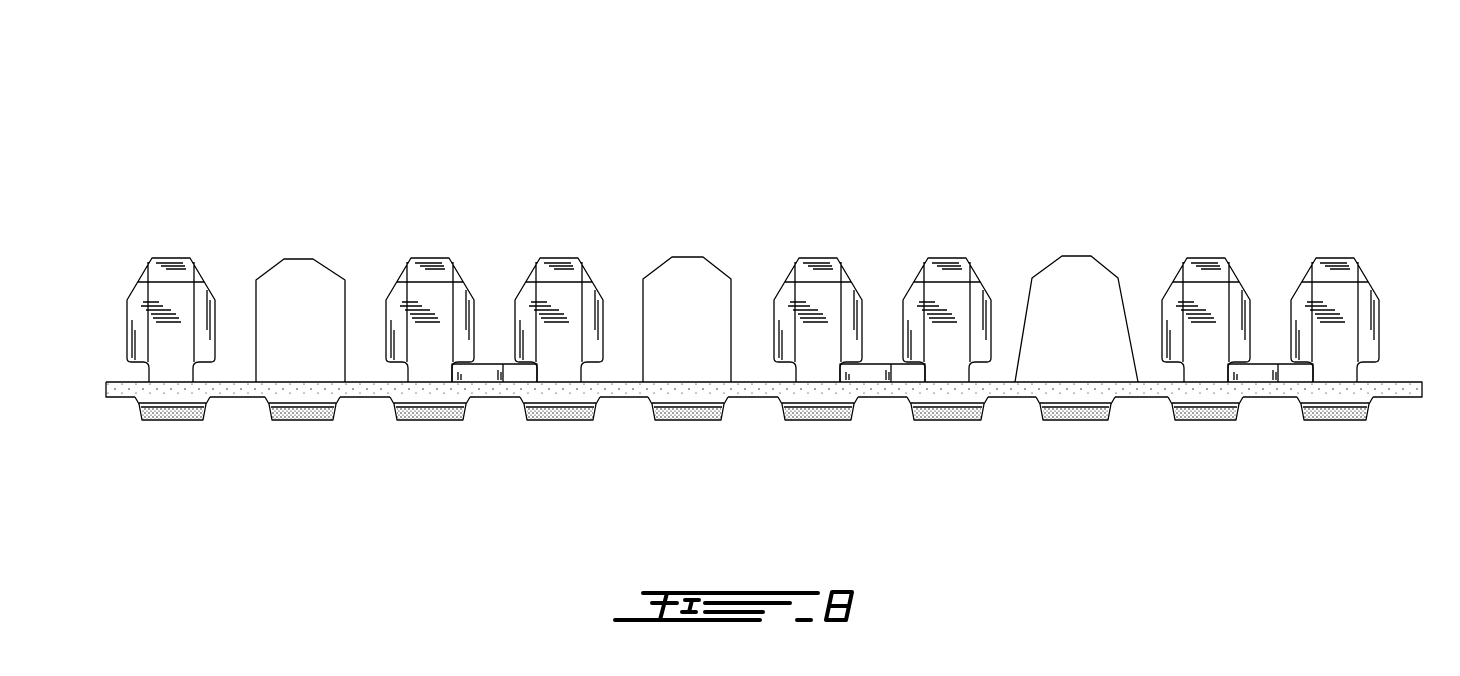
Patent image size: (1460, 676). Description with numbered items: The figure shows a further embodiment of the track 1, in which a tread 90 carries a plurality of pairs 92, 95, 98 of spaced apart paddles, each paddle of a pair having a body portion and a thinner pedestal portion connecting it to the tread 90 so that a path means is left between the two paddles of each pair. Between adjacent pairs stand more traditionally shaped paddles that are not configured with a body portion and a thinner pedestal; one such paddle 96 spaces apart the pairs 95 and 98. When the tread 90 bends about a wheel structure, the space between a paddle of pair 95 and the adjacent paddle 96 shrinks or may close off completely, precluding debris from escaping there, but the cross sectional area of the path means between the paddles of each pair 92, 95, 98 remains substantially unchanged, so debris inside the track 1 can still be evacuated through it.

The track 1 is at (1268, 118).
The tread 90 is at (1403, 387).
The pair of spaced apart paddles 92 is at (494, 371).
The pair of spaced apart paddles 95 is at (882, 371).
The paddle 96 is at (1075, 256).
The pair of spaced apart paddles 98 is at (1270, 371).